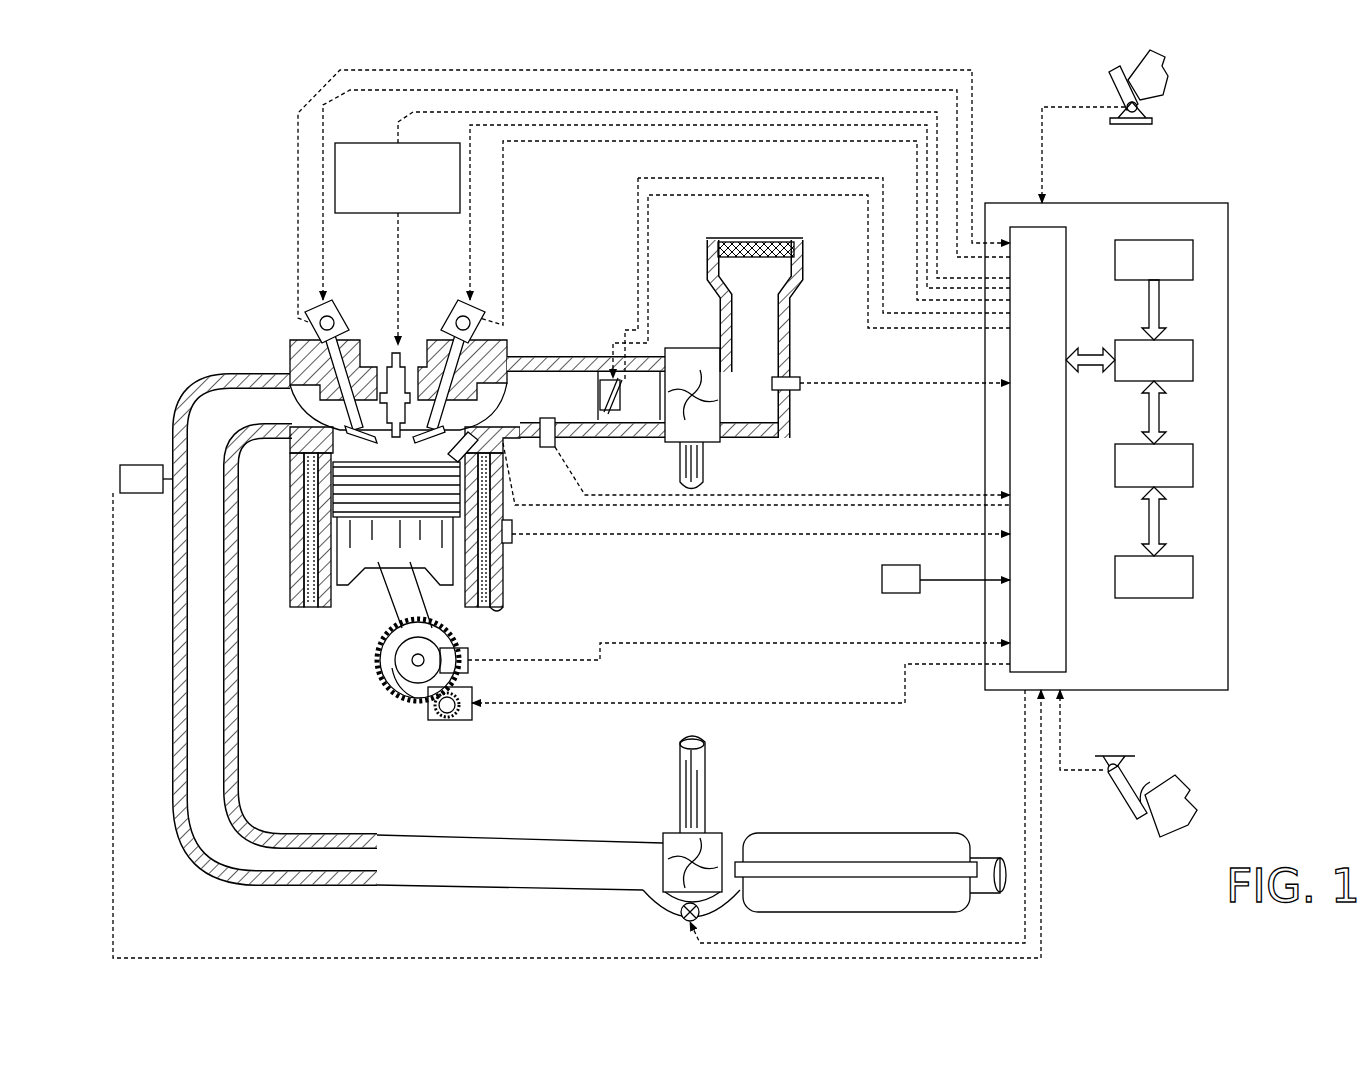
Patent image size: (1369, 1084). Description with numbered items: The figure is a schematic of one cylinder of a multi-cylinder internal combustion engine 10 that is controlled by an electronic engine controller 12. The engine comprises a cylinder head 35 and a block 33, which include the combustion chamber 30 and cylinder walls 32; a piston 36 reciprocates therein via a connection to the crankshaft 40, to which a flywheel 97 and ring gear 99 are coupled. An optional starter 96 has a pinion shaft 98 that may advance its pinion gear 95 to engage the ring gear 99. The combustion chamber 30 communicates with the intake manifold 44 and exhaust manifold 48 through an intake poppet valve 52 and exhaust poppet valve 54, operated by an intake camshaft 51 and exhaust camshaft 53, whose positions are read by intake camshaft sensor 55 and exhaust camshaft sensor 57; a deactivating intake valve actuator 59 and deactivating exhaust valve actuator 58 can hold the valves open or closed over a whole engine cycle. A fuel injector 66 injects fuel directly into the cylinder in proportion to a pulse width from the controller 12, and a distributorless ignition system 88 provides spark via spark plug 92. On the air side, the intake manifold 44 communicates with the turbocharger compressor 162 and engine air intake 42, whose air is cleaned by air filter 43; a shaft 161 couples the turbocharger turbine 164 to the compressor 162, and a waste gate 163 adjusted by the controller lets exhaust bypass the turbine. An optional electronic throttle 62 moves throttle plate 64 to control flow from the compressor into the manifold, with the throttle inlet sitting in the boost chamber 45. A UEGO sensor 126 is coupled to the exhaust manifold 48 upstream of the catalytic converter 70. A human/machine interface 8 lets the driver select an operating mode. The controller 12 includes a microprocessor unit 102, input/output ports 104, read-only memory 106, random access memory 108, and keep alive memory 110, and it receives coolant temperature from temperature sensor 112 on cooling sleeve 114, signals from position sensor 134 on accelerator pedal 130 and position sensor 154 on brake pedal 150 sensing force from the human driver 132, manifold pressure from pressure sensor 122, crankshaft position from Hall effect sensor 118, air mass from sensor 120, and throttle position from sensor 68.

The human/machine interface 8 is at (946, 579).
The internal combustion engine 10 is at (218, 290).
The electronic engine controller 12 is at (1228, 205).
The combustion chamber 30 is at (397, 445).
The cylinder walls 32 is at (347, 603).
The block 33 is at (290, 492).
The cylinder head 35 is at (285, 338).
The piston 36 is at (378, 578).
The crankshaft 40 is at (405, 690).
The engine air intake 42 is at (808, 245).
The air filter 43 is at (770, 257).
The intake manifold 44 is at (533, 412).
The boost chamber 45 is at (656, 412).
The exhaust manifold 48 is at (268, 420).
The intake camshaft 51 is at (458, 300).
The intake poppet valve 52 is at (452, 393).
The exhaust camshaft 53 is at (335, 300).
The exhaust poppet valve 54 is at (345, 400).
The intake camshaft sensor 55 is at (470, 322).
The exhaust camshaft sensor 57 is at (308, 322).
The deactivating exhaust valve actuator 58 is at (340, 322).
The deactivating intake valve actuator 59 is at (455, 328).
The electronic throttle 62 is at (600, 393).
The throttle plate 64 is at (602, 410).
The fuel injector 66 is at (455, 447).
The throttle position sensor 68 is at (632, 385).
The catalytic converter 70 is at (790, 833).
The distributorless ignition system 88 is at (350, 143).
The spark plug 92 is at (412, 372).
The pinion gear 95 is at (455, 718).
The starter 96 is at (465, 705).
The flywheel 97 is at (395, 655).
The pinion shaft 98 is at (440, 715).
The ring gear 99 is at (412, 700).
The microprocessor unit 102 is at (1193, 355).
The input/output ports 104 is at (1066, 230).
The read-only memory 106 is at (1193, 250).
The random access memory 108 is at (1193, 460).
The keep alive memory 110 is at (1193, 570).
The temperature sensor 112 is at (512, 528).
The cooling sleeve 114 is at (500, 550).
The Hall effect sensor 118 is at (468, 655).
The air mass sensor 120 is at (800, 380).
The pressure sensor 122 is at (547, 450).
The Universal Exhaust Gas Oxygen (UEGO) sensor 126 is at (120, 470).
The accelerator pedal 130 is at (1110, 80).
The human driver 132 is at (1165, 70).
The position sensor 134 is at (1140, 112).
The brake pedal 150 is at (1135, 820).
The position sensor 154 is at (1098, 762).
The shaft 161 is at (705, 462).
The turbocharger compressor 162 is at (732, 438).
The waste gate 163 is at (682, 920).
The turbocharger turbine 164 is at (670, 830).